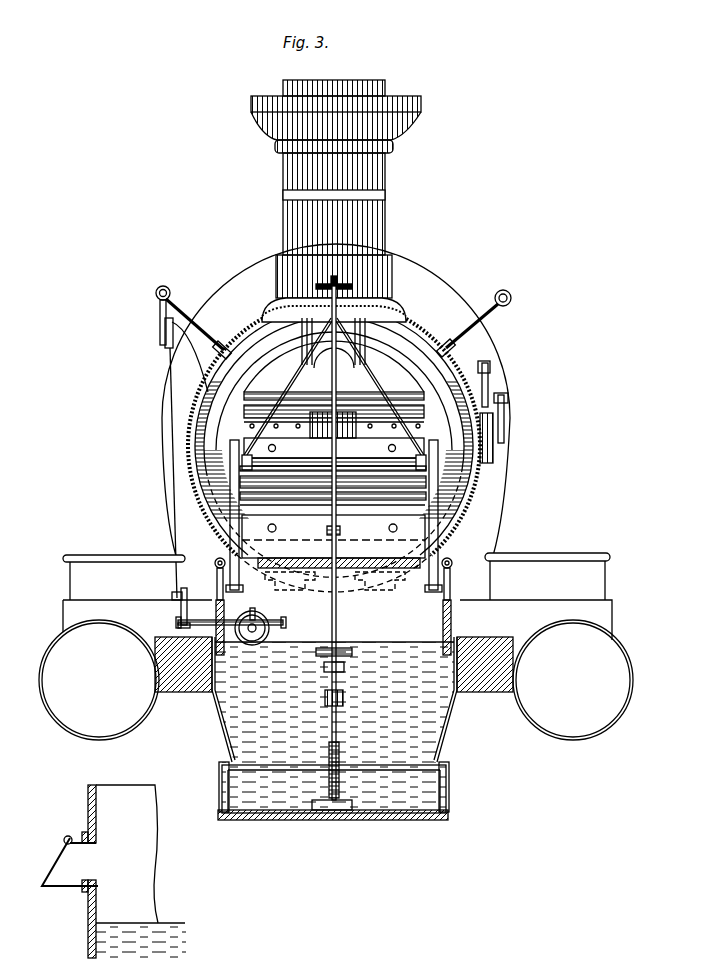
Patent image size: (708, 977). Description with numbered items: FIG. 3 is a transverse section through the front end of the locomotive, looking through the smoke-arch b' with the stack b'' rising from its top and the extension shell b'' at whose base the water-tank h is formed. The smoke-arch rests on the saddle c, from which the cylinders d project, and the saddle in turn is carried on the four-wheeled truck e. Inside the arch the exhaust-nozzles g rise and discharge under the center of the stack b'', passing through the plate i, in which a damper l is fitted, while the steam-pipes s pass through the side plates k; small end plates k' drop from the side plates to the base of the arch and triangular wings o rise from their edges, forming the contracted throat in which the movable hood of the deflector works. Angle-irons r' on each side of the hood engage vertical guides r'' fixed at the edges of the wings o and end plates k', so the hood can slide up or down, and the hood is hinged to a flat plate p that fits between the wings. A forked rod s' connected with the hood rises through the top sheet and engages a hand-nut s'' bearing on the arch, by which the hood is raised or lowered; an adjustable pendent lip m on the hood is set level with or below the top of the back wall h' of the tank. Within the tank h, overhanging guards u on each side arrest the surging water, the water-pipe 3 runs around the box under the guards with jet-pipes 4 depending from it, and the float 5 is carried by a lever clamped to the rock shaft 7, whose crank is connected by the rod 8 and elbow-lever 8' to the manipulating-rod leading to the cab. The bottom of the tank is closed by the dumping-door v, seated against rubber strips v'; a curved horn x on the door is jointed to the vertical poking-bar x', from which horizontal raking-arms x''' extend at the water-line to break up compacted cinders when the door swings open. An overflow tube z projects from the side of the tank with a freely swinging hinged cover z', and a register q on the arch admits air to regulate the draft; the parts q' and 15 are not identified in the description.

The stack b'' is at (336, 201).
The hand-nut s'' is at (326, 273).
The elbow-lever 8' is at (150, 315).
The smoke-arch b' is at (338, 397).
The rod 8 is at (164, 474).
The forked rod s' is at (334, 386).
The plate i is at (334, 388).
The damper l is at (334, 408).
The exhaust-nozzles g is at (333, 427).
The flat plate p is at (334, 451).
The steam-pipes s is at (334, 446).
The side plates k is at (332, 510).
The triangular wings o is at (334, 450).
The vertical guides r'' is at (333, 485).
The angle-irons r' is at (332, 495).
The end plates k' is at (332, 550).
The four-wheeled truck e is at (329, 533).
The pendent lip m is at (333, 552).
The water-pipe 3 is at (215, 561).
The hinged cover z' is at (188, 604).
The saddle c is at (337, 622).
The overhanging guards u is at (330, 597).
The jet-pipes 4 is at (444, 612).
The float 5 is at (262, 618).
The rock shaft 7 is at (235, 629).
The poking-bar x' is at (315, 619).
The raking-arms x''' is at (344, 647).
The rear wall h' is at (352, 650).
The cylinders d is at (336, 680).
The water-tank h is at (340, 725).
The curved horn x is at (332, 548).
The rubber strips v' is at (325, 787).
The dumping-door v is at (333, 828).
The lever 15 is at (490, 364).
The rod q' is at (513, 417).
The register q is at (493, 441).
The overflow tube z is at (106, 871).